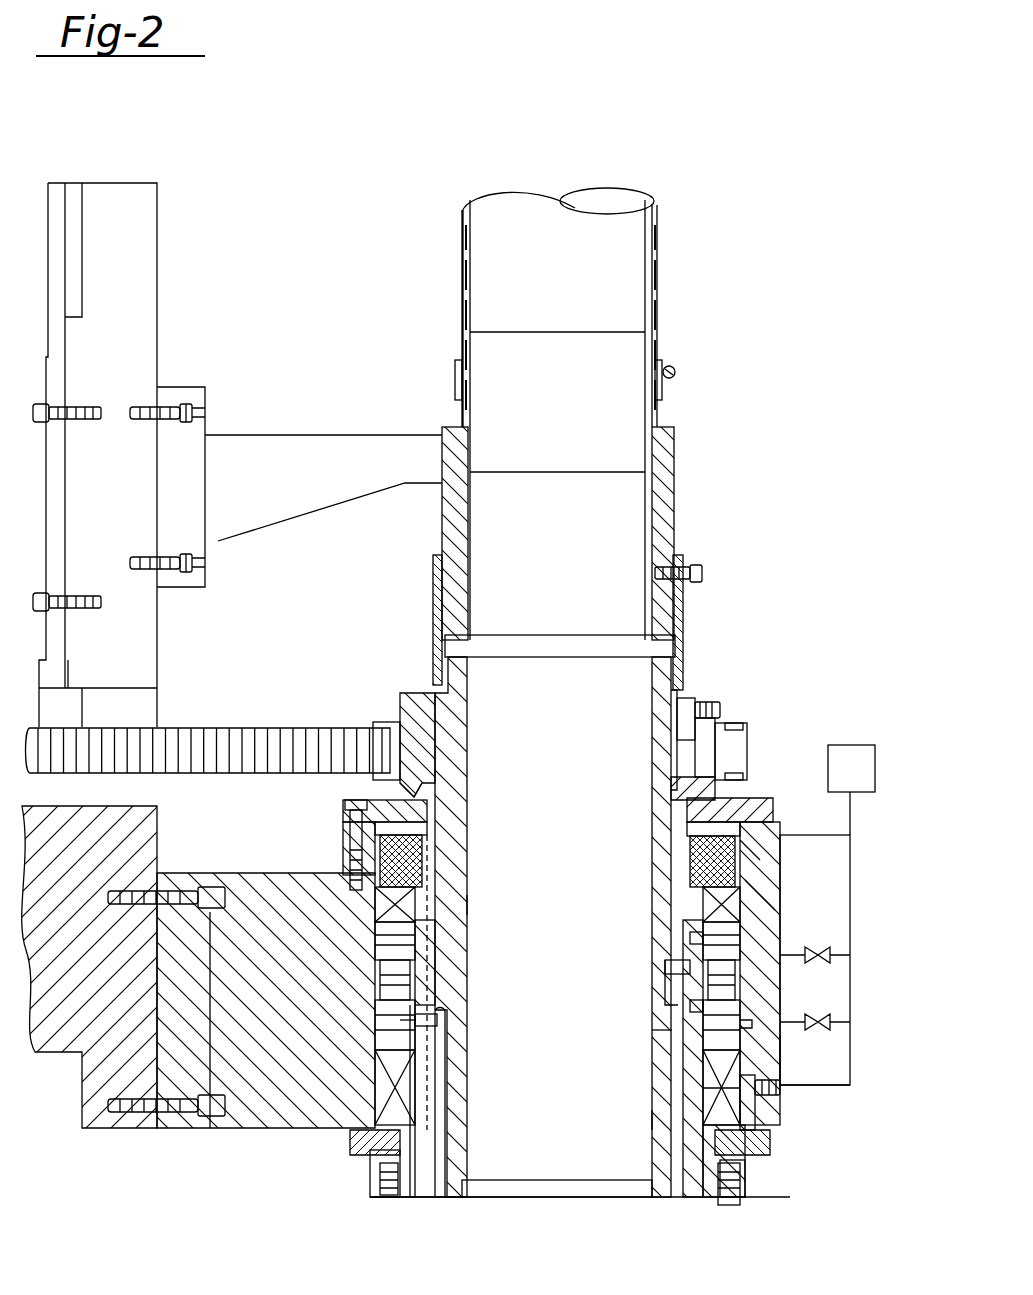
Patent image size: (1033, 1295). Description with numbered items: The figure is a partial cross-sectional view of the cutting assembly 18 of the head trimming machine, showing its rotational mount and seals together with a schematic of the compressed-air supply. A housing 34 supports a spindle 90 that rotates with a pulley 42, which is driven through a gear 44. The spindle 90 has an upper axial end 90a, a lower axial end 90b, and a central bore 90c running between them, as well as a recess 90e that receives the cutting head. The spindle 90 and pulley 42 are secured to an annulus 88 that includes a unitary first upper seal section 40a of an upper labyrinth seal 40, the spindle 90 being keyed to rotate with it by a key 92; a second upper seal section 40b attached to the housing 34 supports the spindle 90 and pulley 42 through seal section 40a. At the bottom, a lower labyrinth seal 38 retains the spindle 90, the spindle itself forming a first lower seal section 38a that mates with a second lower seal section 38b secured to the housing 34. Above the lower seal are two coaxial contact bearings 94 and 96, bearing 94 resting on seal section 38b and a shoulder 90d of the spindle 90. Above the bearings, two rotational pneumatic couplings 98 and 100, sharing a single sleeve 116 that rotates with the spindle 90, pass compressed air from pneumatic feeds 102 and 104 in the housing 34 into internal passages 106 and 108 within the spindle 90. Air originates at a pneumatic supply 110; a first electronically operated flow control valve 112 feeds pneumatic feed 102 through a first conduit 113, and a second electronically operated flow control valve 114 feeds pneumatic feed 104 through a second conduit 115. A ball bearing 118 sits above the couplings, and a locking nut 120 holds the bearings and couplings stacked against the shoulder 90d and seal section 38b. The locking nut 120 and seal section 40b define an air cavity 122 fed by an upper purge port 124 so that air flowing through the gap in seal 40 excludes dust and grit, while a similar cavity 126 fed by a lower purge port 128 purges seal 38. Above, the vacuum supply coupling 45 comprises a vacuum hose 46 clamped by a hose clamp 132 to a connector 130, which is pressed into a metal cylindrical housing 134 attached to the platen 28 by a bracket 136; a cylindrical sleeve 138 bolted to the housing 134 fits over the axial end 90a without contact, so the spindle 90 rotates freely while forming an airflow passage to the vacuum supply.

The cutting assembly 18 is at (857, 610).
The platen 28 is at (150, 354).
The housing 34 is at (240, 1130).
The lower labyrinth seal 38 is at (358, 1176).
The first lower seal section 38a is at (372, 1197).
The second lower seal section 38b is at (350, 1142).
The upper labyrinth seal 40 is at (372, 801).
The first upper seal section 40a is at (418, 792).
The second upper seal section 40b is at (345, 822).
The pulley 42 is at (742, 730).
The gear 44 is at (291, 735).
The vacuum supply coupling 45 is at (744, 354).
The vacuum hose 46 is at (657, 240).
The annulus 88 is at (412, 693).
The spindle 90 is at (467, 905).
The upper axial end 90a is at (650, 657).
The lower axial end 90b is at (425, 1200).
The central bore 90c is at (560, 918).
The shoulder 90d is at (690, 1122).
The recess 90e is at (650, 1200).
The key 92 is at (687, 700).
The contact bearing 94 is at (703, 1090).
The contact bearing 96 is at (703, 1070).
The rotational pneumatic coupling 98 is at (690, 1006).
The rotational pneumatic coupling 100 is at (762, 892).
The pneumatic feed 102 is at (780, 1045).
The pneumatic feed 104 is at (758, 922).
The internal passage 106 is at (445, 1065).
The internal passage 108 is at (655, 1032).
The pneumatic supply 110 is at (876, 745).
The first electronically operated flow control valve 112 is at (835, 1040).
The first conduit 113 is at (805, 1018).
The second electronically operated flow control valve 114 is at (665, 968).
The second conduit 115 is at (805, 957).
The sleeve 116 is at (690, 940).
The ball bearing 118 is at (703, 898).
The locking nut 120 is at (690, 860).
The air cavity 122 is at (690, 845).
The upper purge port 124 is at (750, 887).
The cavity 126 is at (755, 1125).
The lower purge port 128 is at (780, 1088).
The connector 130 is at (660, 414).
The hose clamp 132 is at (672, 366).
The cylindrical housing 134 is at (674, 497).
The bracket 136 is at (341, 448).
The cylindrical sleeve 138 is at (683, 598).